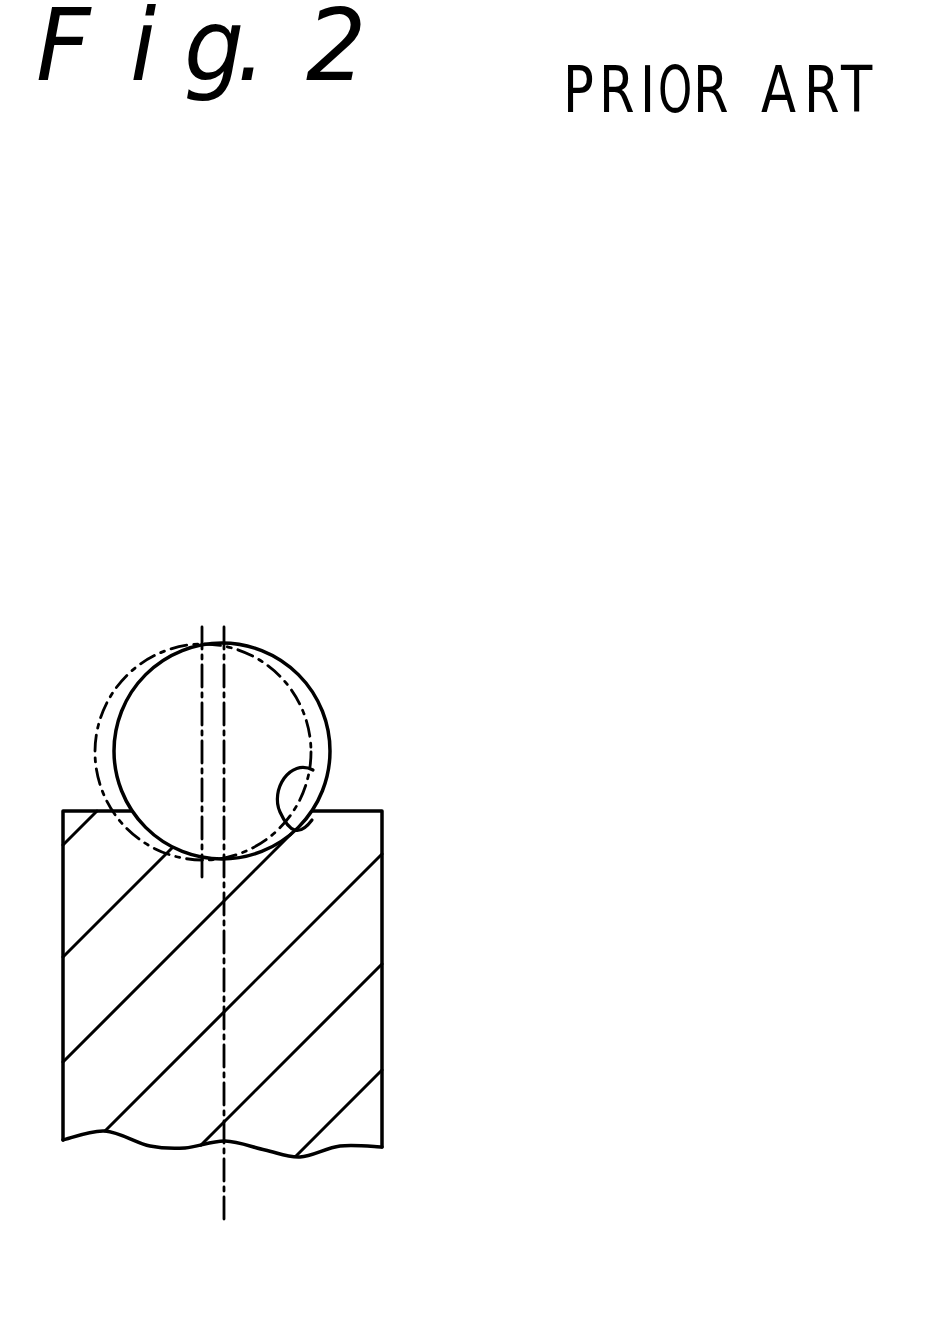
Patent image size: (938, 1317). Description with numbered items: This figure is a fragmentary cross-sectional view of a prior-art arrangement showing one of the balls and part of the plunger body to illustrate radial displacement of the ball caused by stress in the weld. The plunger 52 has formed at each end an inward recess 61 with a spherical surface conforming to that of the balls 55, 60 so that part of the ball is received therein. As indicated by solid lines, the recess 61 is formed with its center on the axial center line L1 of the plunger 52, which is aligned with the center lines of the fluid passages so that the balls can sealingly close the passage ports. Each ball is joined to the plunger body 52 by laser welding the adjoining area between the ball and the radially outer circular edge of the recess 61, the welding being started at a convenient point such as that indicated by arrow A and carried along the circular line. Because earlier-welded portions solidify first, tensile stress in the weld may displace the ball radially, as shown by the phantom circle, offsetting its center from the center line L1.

The plunger 52 is at (382, 992).
The ball 55 is at (320, 703).
The ball 60 is at (350, 600).
The inward recess 61 is at (311, 768).
The axial center line L1 is at (224, 1182).
The arrow A is at (103, 798).